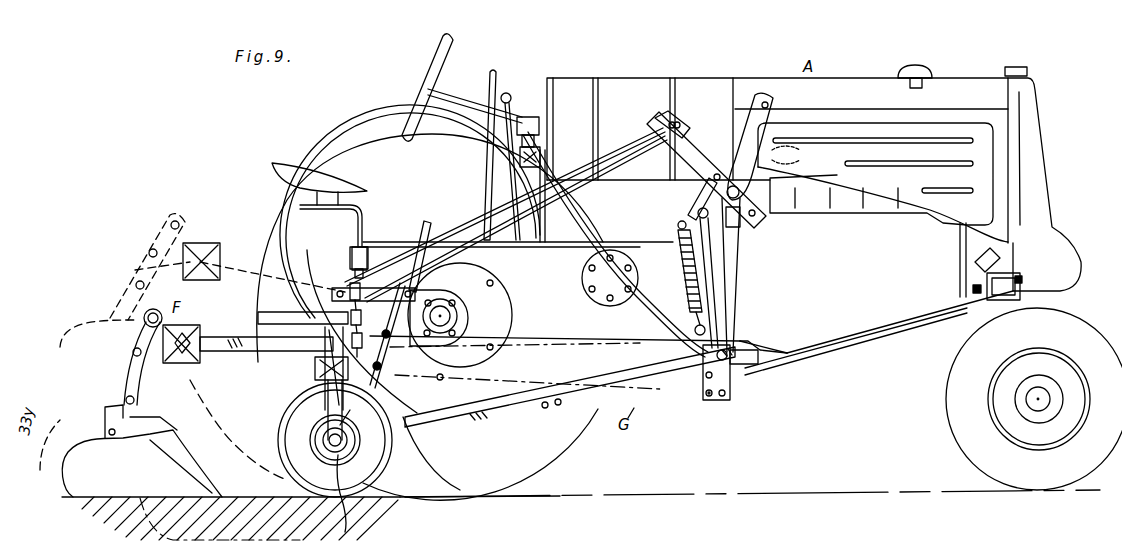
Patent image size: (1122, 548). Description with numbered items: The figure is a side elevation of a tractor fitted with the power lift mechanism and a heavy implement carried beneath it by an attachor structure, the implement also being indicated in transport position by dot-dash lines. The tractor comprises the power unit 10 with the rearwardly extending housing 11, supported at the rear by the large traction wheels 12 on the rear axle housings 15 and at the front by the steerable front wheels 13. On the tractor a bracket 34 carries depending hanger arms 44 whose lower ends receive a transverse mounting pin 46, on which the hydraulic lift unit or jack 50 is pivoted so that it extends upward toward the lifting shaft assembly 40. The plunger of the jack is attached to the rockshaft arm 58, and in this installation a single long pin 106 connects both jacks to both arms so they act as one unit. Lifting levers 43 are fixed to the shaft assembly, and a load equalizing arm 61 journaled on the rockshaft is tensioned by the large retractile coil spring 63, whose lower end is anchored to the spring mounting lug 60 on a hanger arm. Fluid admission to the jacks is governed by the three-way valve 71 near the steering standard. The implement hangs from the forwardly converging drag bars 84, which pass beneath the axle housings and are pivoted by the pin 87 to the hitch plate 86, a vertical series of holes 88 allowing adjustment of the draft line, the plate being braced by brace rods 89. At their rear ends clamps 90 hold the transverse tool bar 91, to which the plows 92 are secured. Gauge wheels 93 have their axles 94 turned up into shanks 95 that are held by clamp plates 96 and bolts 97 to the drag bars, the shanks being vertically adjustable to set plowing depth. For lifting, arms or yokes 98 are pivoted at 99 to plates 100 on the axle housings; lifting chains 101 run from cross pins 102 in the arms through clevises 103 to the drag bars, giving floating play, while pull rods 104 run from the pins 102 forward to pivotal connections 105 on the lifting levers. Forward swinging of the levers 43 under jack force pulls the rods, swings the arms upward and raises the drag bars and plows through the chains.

The power unit 10 is at (900, 322).
The housing 11 is at (679, 335).
The traction wheels 12 is at (500, 490).
The front wheels 13 is at (1072, 325).
The rear axle housings 15 is at (452, 300).
The bracket 34 is at (742, 230).
The lifting shaft or rock shaft assembly 40 is at (763, 146).
The lifting levers 43 is at (706, 164).
The hanger arms 44 is at (738, 268).
The mounting pin 46 is at (738, 345).
The lift unit or jack 50 is at (718, 258).
The rockshaft arm 58 is at (712, 200).
The spring mounting finger or lug 60 is at (696, 330).
The load equalizing lever or arm 61 is at (678, 225).
The retractile coil spring 63 is at (684, 264).
The three-way valve 71 is at (540, 152).
The drag bars 84 is at (540, 418).
The hitch plate 86 is at (730, 370).
The pin 87 is at (706, 397).
The holes 88 is at (730, 398).
The brace rods 89 is at (800, 372).
The clamps 90 is at (215, 340).
The tool bar 91 is at (200, 330).
The plows 92 is at (165, 395).
The gauge wheels 93 is at (385, 470).
The axles 94 is at (348, 499).
The tangs or shanks 95 is at (326, 410).
The clamps or clamp plates 96 is at (314, 368).
The bolts 97 is at (322, 340).
The lifting arms or yokes 98 is at (403, 290).
The pivot 99 is at (418, 292).
The plates 100 is at (470, 335).
The lifting chains 101 is at (300, 313).
The cross pins 102 is at (350, 270).
The clevises 103 is at (395, 420).
The pull rods or bars 104 is at (478, 250).
The pivotal connection 105 is at (678, 122).
The long pin 106 is at (698, 212).